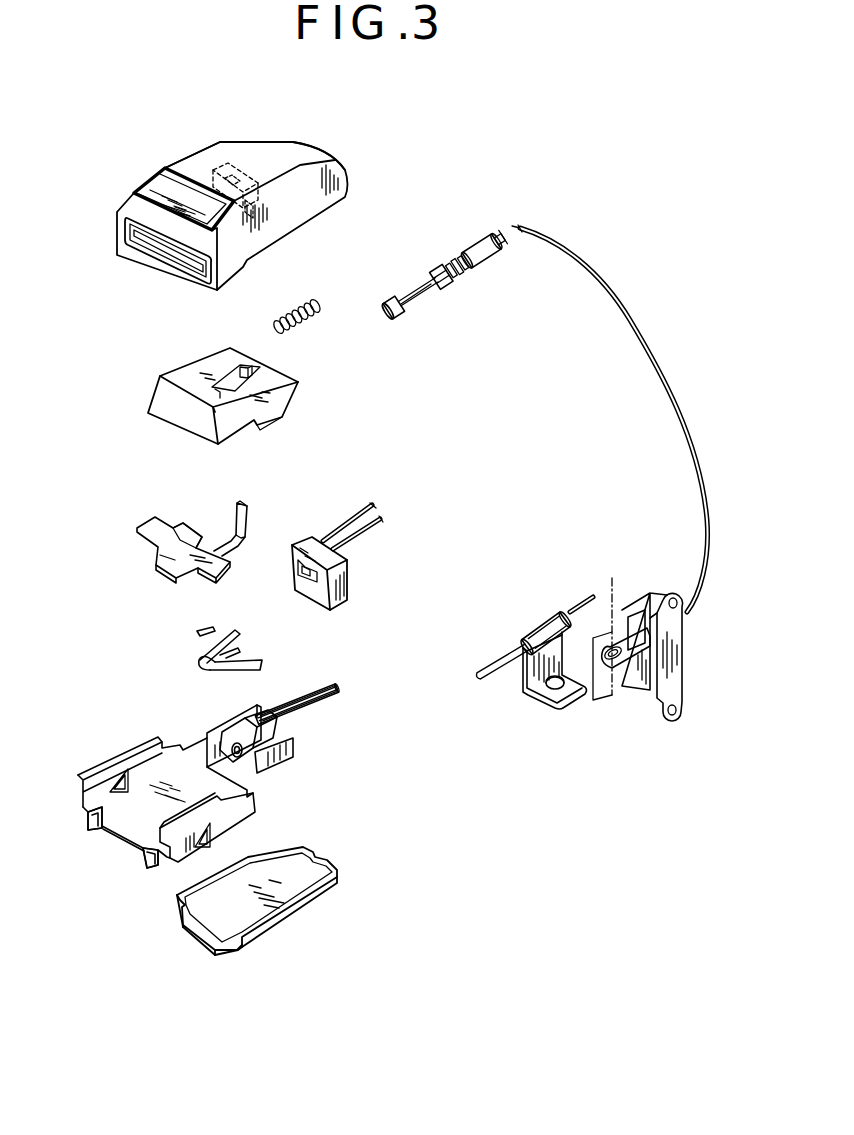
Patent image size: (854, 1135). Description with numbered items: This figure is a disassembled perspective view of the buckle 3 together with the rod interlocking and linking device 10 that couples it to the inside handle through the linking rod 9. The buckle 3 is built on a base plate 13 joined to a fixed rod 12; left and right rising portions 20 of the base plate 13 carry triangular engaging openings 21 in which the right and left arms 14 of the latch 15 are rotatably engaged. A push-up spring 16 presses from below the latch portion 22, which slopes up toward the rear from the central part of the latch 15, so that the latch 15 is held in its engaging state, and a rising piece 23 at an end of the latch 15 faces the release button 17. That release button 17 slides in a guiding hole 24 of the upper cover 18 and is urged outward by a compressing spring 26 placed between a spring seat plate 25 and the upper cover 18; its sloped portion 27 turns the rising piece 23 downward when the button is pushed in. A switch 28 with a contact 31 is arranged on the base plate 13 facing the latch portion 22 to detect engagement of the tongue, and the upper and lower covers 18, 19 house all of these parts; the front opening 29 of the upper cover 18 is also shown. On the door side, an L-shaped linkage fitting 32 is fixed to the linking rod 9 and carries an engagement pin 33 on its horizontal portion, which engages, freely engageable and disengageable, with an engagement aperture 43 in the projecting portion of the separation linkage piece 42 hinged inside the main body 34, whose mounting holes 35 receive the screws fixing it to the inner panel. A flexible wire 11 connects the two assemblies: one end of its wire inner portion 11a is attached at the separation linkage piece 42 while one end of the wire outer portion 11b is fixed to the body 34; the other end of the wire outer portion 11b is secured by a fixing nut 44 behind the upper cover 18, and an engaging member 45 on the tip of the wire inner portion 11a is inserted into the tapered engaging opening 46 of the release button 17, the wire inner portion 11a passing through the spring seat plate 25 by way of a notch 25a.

The buckle 3 is at (228, 195).
The linking rod 9 is at (493, 668).
The rod interlocking and linking device 10 is at (608, 657).
The flexible wire 11 is at (544, 418).
The wire inner portion 11a is at (428, 300).
The wire outer portion 11b is at (494, 265).
The fixed rod 12 is at (314, 692).
The base plate 13 is at (185, 775).
The arms 14 is at (183, 544).
The latch 15 is at (162, 555).
The push-up spring 16 is at (197, 665).
The release button 17 is at (210, 376).
The upper cover 18 is at (187, 152).
The lower cover 19 is at (290, 925).
The rising portions 20 is at (86, 791).
The triangular engaging openings 21 is at (124, 778).
The latch portion 22 is at (183, 525).
The rising piece 23 is at (245, 505).
The guiding hole 24 is at (183, 200).
The spring seat plate 25 is at (232, 166).
The notch 25a is at (262, 207).
The compressing spring 26 is at (300, 312).
The sloped portion 27 is at (292, 410).
The switch 28 is at (345, 570).
The front opening 29 is at (148, 237).
The contact 31 is at (302, 582).
The linkage fitting 32 is at (537, 692).
The engagement pin 33 is at (559, 690).
The main body 34 is at (684, 637).
The mounting holes 35 is at (682, 604).
The separation linkage piece 42 is at (600, 624).
The engagement aperture 43 is at (608, 630).
The fixing nut 44 is at (437, 275).
The engaging member 45 is at (396, 320).
The engaging opening 46 is at (235, 383).